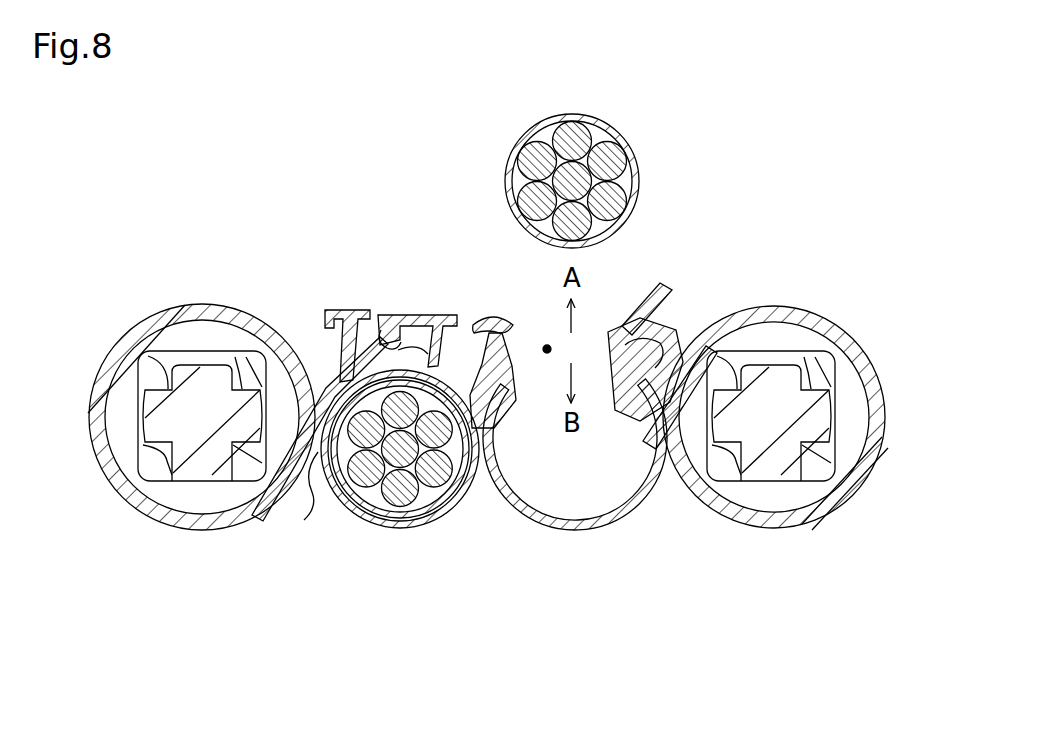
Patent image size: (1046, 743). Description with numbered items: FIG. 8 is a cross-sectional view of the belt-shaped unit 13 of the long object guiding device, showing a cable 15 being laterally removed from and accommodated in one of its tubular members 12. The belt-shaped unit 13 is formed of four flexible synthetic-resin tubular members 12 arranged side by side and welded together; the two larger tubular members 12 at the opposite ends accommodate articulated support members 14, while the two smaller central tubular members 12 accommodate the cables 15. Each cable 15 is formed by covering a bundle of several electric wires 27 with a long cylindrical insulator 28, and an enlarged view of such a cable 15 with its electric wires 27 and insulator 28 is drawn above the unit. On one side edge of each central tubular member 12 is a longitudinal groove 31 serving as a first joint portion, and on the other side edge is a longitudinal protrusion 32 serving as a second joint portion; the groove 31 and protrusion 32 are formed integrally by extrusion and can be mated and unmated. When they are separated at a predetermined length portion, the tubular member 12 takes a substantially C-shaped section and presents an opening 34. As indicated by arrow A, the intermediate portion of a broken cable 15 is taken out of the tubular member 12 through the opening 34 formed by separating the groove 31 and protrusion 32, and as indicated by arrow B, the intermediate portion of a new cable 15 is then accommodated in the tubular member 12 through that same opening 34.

The tubular member 12 is at (158, 531).
The belt-shaped unit 13 is at (470, 356).
The articulated support member 14 is at (177, 350).
The cable 15 is at (519, 366).
The electric wire 27 is at (603, 143).
The insulator 28 is at (640, 168).
The groove 31 is at (384, 318).
The protrusion 32 is at (421, 313).
The opening 34 is at (545, 346).